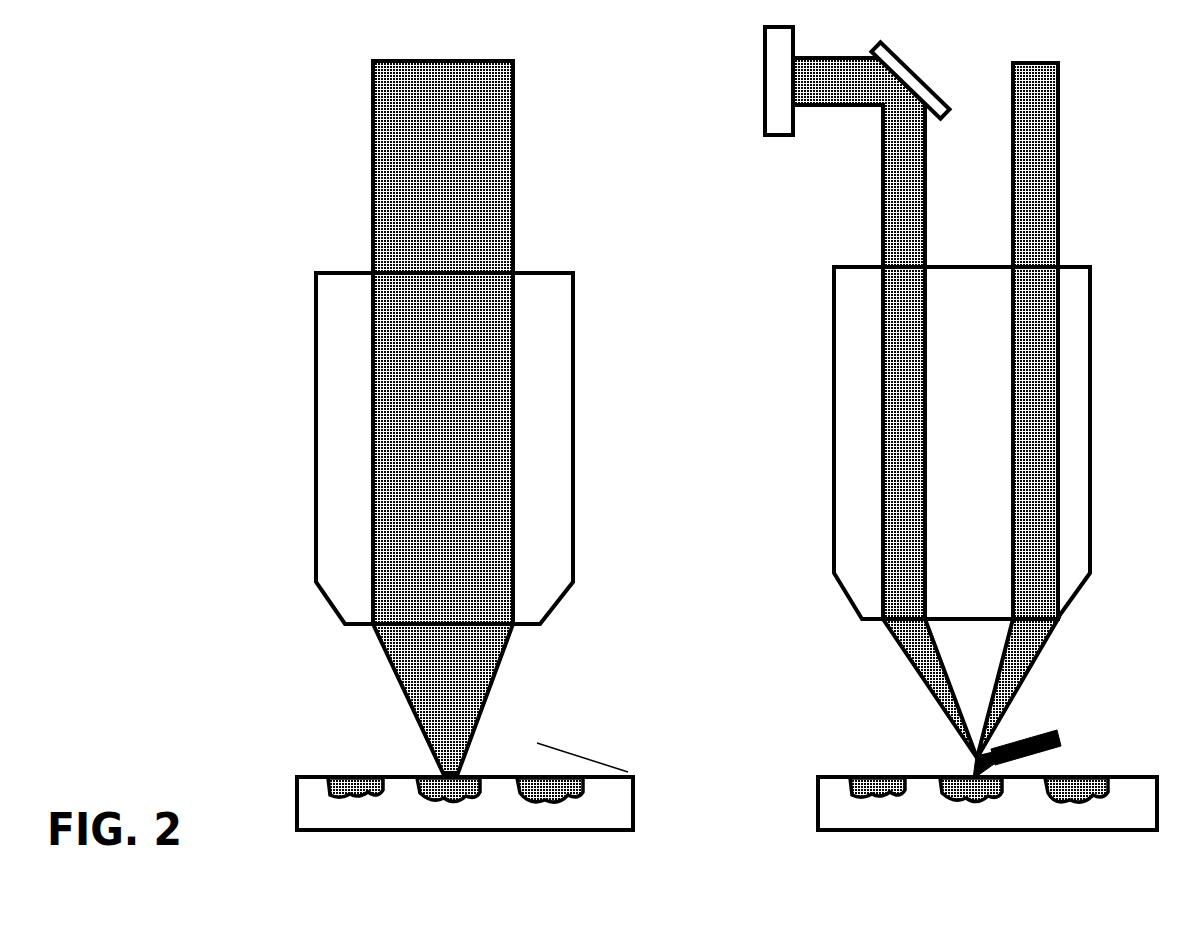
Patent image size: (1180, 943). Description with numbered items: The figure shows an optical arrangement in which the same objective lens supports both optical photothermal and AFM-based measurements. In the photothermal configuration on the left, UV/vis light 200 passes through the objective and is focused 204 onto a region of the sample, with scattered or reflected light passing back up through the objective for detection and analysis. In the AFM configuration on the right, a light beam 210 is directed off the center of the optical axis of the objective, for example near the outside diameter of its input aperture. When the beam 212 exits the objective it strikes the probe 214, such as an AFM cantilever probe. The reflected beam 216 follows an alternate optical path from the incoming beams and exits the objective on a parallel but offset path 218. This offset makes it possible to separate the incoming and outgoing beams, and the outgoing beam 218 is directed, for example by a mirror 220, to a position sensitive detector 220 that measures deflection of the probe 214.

The UV/vis light 200 is at (443, 342).
The focused light 204 is at (435, 698).
The light beam 210 is at (1047, 410).
The beam exiting objective 212 is at (1031, 726).
The probe 214 is at (973, 755).
The reflected beam 216 is at (912, 688).
The outgoing beam 218 is at (859, 338).
The mirror and position sensitive detector 220 is at (834, 81).